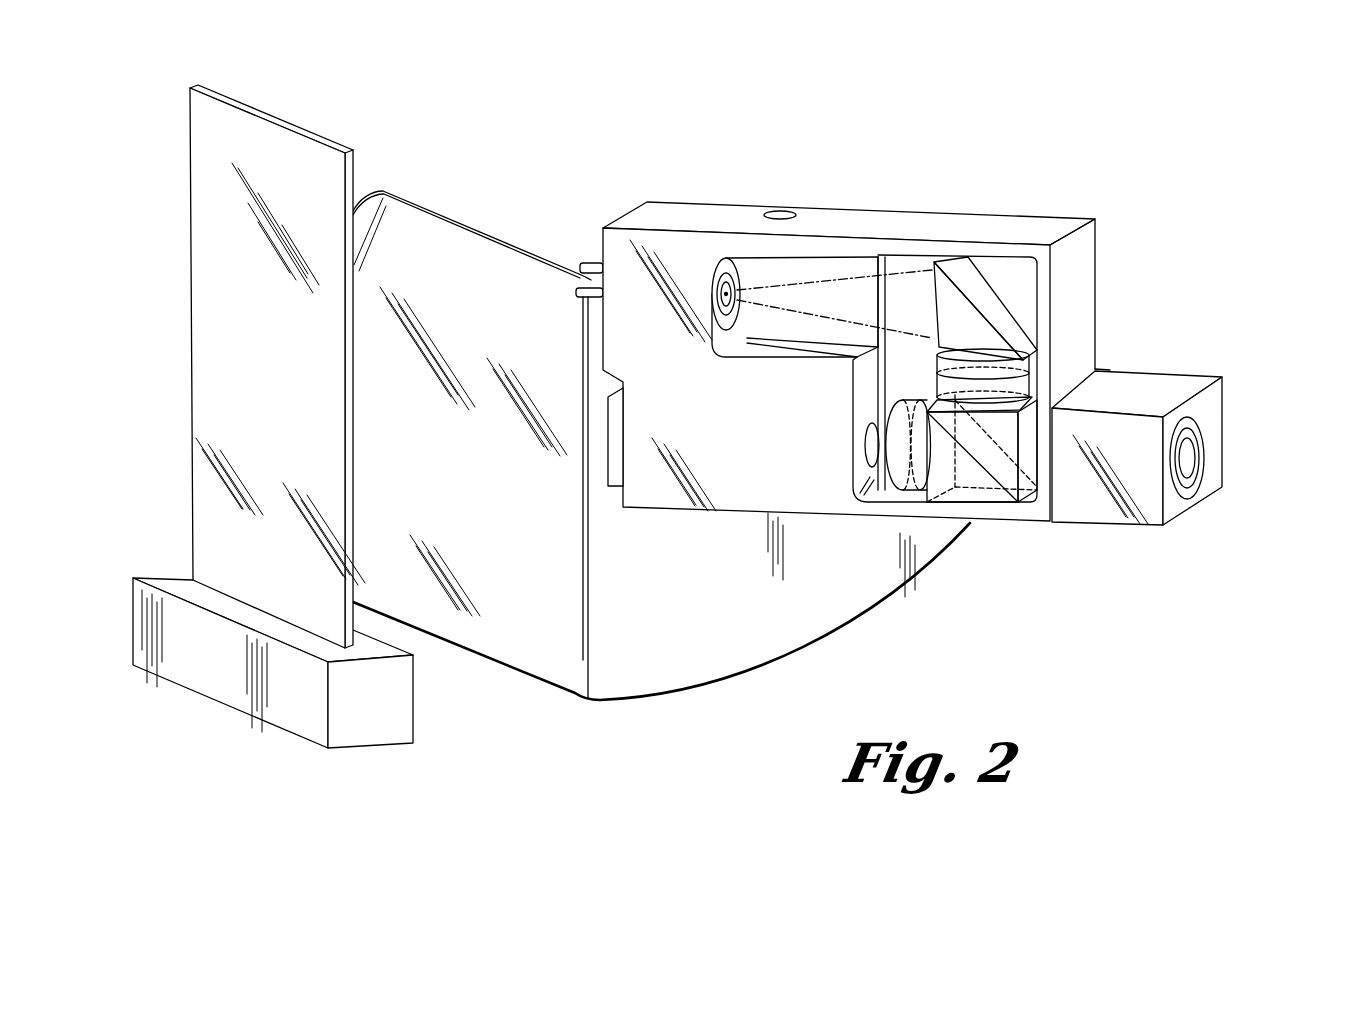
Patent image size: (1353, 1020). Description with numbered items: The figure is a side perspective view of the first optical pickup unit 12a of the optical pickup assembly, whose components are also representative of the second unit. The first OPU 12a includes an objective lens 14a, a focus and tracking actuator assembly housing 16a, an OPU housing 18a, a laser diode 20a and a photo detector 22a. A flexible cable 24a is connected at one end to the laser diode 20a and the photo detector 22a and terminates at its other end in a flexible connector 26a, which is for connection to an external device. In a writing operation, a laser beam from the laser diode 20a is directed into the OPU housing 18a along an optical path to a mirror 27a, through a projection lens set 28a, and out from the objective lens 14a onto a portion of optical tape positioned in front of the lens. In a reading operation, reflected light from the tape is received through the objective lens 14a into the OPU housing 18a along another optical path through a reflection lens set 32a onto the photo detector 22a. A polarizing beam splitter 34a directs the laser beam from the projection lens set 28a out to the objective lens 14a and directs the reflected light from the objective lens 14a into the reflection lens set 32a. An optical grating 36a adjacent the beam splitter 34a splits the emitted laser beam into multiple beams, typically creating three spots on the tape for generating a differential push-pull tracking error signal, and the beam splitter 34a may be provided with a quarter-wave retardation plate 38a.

The first optical pickup unit 12a is at (1042, 100).
The objective lens 14a is at (1195, 458).
The focus and tracking actuator assembly housing 16a is at (1195, 500).
The OPU housing 18a is at (672, 250).
The laser diode 20a is at (591, 263).
The photo detector 22a is at (615, 440).
The flexible cable 24a is at (487, 257).
The flexible connector 26a is at (215, 662).
The mirror 27a is at (1012, 285).
The projection lens set 28a is at (982, 352).
The reflection lens set 32a is at (863, 505).
The polarizing beam splitter 34a is at (963, 510).
The optical grating 36a is at (935, 400).
The quarter-wave retardation plate 38a is at (1030, 493).